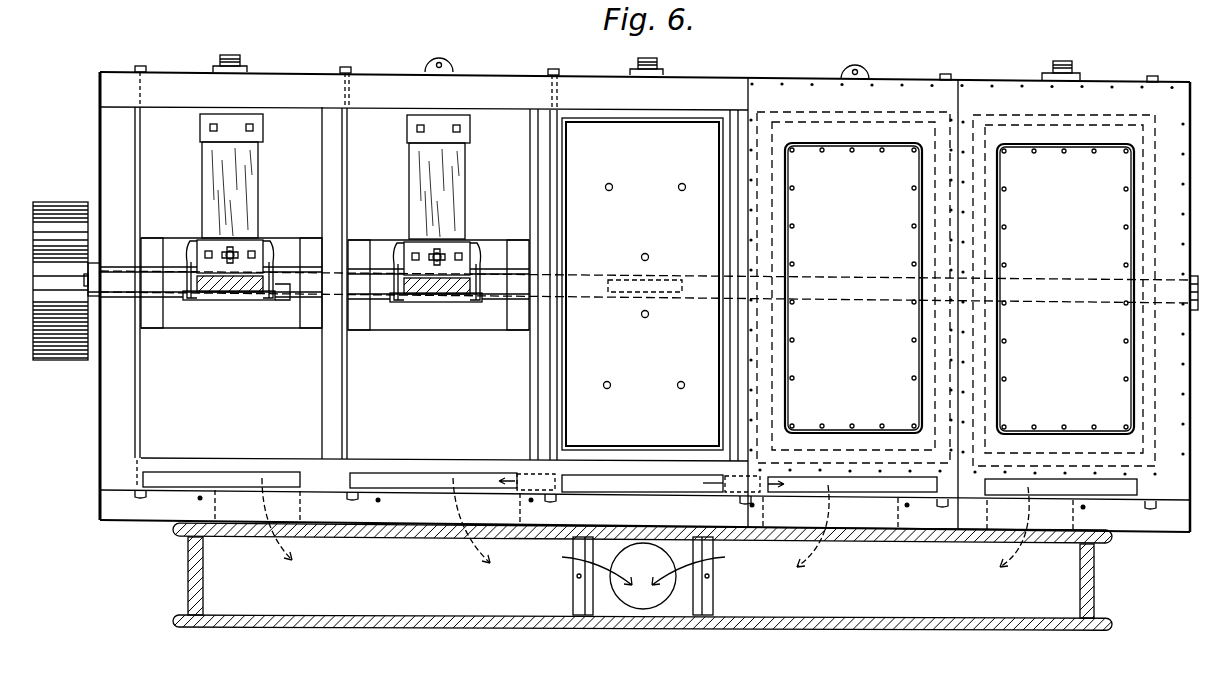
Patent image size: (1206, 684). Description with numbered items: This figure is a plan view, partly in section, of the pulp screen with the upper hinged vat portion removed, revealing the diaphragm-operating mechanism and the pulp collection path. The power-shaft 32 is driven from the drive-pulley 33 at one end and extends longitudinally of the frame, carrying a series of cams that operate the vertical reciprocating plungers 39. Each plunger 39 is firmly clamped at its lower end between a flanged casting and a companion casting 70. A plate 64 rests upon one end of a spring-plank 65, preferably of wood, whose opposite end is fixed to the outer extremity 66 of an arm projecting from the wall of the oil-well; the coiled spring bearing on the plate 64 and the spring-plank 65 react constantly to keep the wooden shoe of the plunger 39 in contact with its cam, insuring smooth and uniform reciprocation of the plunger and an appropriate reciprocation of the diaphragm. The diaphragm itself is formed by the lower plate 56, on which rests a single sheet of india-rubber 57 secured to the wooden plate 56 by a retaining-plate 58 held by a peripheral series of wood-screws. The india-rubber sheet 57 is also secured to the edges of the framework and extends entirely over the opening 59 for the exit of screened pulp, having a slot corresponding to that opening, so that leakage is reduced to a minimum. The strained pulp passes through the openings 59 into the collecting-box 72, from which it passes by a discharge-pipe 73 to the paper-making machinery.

The drive-pulley 33 is at (62, 198).
The outer extremity of arm 66 is at (262, 137).
The spring-plank 65 is at (255, 178).
The plate 64 is at (251, 252).
The vertical reciprocating plunger 39 is at (243, 287).
The companion casting 70 is at (213, 295).
The power-shaft 32 is at (284, 298).
The lower plate of the diaphragm 56 is at (642, 284).
The india-rubber sheet 57 is at (1140, 543).
The retaining-plate 58 is at (959, 288).
The opening for exit of screened pulp 59 is at (188, 480).
The collecting-box 72 is at (642, 576).
The discharge-pipe 73 is at (647, 596).